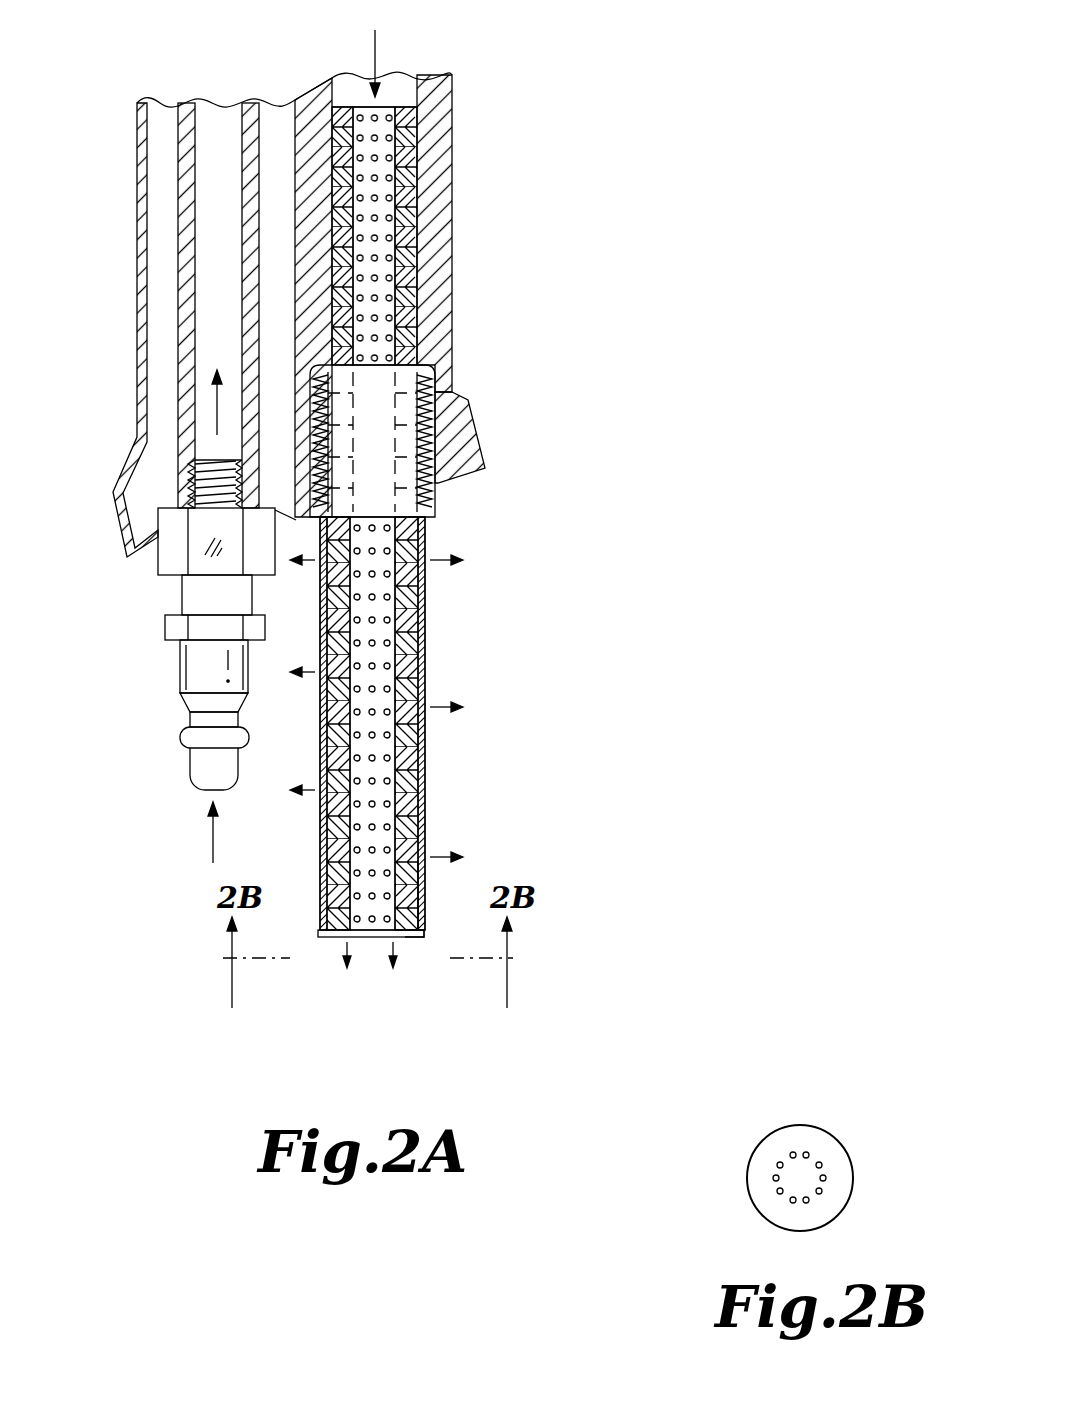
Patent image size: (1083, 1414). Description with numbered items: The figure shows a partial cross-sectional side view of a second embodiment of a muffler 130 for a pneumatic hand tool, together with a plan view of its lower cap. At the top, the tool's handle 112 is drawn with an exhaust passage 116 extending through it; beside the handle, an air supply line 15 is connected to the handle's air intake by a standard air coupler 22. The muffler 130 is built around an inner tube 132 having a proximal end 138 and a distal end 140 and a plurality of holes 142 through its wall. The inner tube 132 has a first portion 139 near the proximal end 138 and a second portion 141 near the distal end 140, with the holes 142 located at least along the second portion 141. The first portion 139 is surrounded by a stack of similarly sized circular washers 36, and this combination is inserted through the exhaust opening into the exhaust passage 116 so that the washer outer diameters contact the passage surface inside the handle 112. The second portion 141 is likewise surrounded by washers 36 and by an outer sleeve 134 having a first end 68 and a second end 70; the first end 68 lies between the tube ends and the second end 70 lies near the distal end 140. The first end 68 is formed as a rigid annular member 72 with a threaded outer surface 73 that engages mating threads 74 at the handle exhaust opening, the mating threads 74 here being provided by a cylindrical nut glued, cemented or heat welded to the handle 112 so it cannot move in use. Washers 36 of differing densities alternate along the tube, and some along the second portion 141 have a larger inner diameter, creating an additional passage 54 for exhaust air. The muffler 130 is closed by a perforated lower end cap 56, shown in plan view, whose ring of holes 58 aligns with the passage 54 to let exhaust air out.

In FIG. 2A, the handle 112 is at (136, 158).
In FIG. 2A, the exhaust passage 116 is at (407, 92).
In FIG. 2A, the inner tube proximal end 138 is at (385, 145).
In FIG. 2A, the inner tube first portion 139 is at (378, 208).
In FIG. 2A, the washers 36 is at (420, 298).
In FIG. 2A, the outer sleeve first end 68 is at (447, 393).
In FIG. 2A, the mating threads 74 is at (440, 467).
In FIG. 2A, the annular member 72 is at (307, 450).
In FIG. 2A, the threaded outer surface 73 is at (307, 484).
In FIG. 2A, the air coupler 22 is at (180, 655).
In FIG. 2A, the air supply line 15 is at (190, 770).
In FIG. 2A, the muffler 130 is at (548, 676).
In FIG. 2A, the outer sleeve 134 is at (420, 637).
In FIG. 2A, the inner tube second portion 141 is at (373, 718).
In FIG. 2A, the holes 142 is at (387, 792).
In FIG. 2A, the inner tube 132 is at (370, 843).
In FIG. 2A, the outer sleeve second end 70 is at (425, 890).
In FIG. 2A, the passage 54 is at (348, 873).
In FIG. 2A, the inner tube distal end 140 is at (376, 937).
In FIG. 2A, the lower end cap 56 is at (415, 937).
In FIG. 2B, the lower end cap 56 is at (740, 1182).
In FIG. 2B, the ring of holes 58 is at (778, 1162).